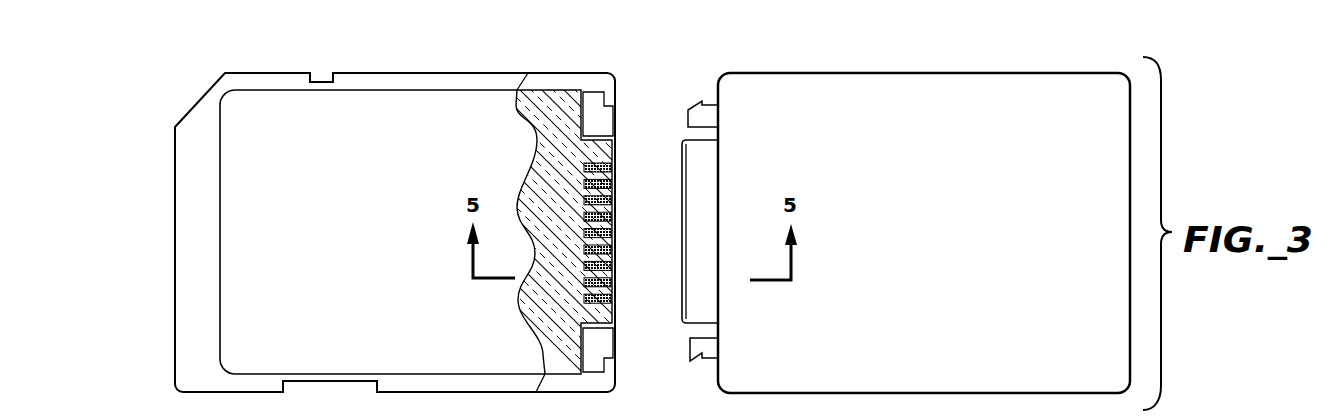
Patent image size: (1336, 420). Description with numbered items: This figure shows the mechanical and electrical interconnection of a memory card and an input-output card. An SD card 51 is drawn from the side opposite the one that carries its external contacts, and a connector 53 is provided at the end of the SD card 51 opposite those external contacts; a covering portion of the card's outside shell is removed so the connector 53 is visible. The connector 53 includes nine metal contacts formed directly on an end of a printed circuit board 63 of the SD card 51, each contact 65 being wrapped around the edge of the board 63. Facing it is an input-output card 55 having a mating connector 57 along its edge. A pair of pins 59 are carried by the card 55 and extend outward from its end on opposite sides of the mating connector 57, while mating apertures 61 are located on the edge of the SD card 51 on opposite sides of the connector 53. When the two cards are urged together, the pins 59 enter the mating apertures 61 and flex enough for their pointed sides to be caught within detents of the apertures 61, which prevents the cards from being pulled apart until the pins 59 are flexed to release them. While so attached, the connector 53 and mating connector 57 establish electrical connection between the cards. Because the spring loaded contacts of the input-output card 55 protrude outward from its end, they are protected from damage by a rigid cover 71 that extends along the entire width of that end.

The SD card 51 is at (396, 64).
The connector 53 is at (620, 298).
The input-output card 55 is at (986, 66).
The mating connector 57 is at (676, 156).
The pins 59 is at (695, 94).
The mating apertures 61 is at (592, 100).
The printed circuit board 63 is at (543, 104).
The contact 65 is at (614, 283).
The rigid cover 71 is at (703, 203).